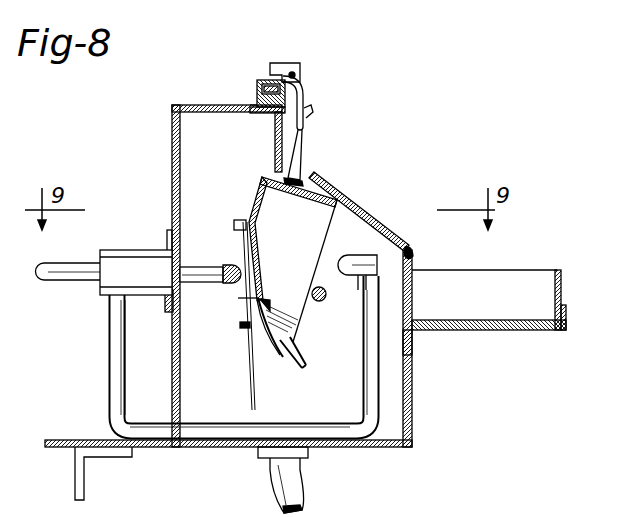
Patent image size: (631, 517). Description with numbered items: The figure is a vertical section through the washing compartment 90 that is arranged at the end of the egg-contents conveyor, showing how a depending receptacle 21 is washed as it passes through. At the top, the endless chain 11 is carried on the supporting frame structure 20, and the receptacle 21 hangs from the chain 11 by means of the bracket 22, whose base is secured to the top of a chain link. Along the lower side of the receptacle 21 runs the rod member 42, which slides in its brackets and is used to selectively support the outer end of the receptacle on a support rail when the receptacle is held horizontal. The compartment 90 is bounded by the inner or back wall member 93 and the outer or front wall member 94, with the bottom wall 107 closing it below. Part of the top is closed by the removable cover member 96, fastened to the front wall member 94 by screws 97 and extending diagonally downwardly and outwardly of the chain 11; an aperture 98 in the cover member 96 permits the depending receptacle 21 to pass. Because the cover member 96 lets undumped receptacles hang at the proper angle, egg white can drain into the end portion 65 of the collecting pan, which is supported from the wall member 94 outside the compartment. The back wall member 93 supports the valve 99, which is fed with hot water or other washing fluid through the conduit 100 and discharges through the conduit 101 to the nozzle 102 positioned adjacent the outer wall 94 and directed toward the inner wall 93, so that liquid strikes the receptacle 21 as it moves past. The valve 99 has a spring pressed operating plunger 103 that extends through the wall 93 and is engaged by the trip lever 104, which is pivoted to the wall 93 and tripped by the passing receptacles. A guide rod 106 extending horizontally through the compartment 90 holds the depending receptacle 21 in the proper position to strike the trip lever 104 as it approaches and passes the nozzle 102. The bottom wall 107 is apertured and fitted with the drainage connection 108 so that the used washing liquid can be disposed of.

The endless chain 11 is at (256, 96).
The supporting frame structure 20 is at (216, 110).
The egg contents receiving receptacle 21 is at (251, 205).
The bracket 22 is at (301, 93).
The rod member 42 is at (247, 373).
The end portion of the collecting pan 65 is at (561, 275).
The compartment 90 is at (410, 387).
The back wall forming member 93 is at (180, 172).
The front wall forming member 94 is at (410, 357).
The cover member 96 is at (330, 179).
The screws 97 is at (412, 256).
The aperture 98 is at (310, 139).
The valve 99 is at (131, 250).
The conduit 100 is at (66, 262).
The conduit 101 is at (290, 423).
The nozzle 102 is at (375, 248).
The operating plunger 103 is at (212, 251).
The trip lever 104 is at (225, 284).
The guide rod 106 is at (322, 302).
The bottom wall 107 is at (361, 450).
The drainage connection 108 is at (299, 471).